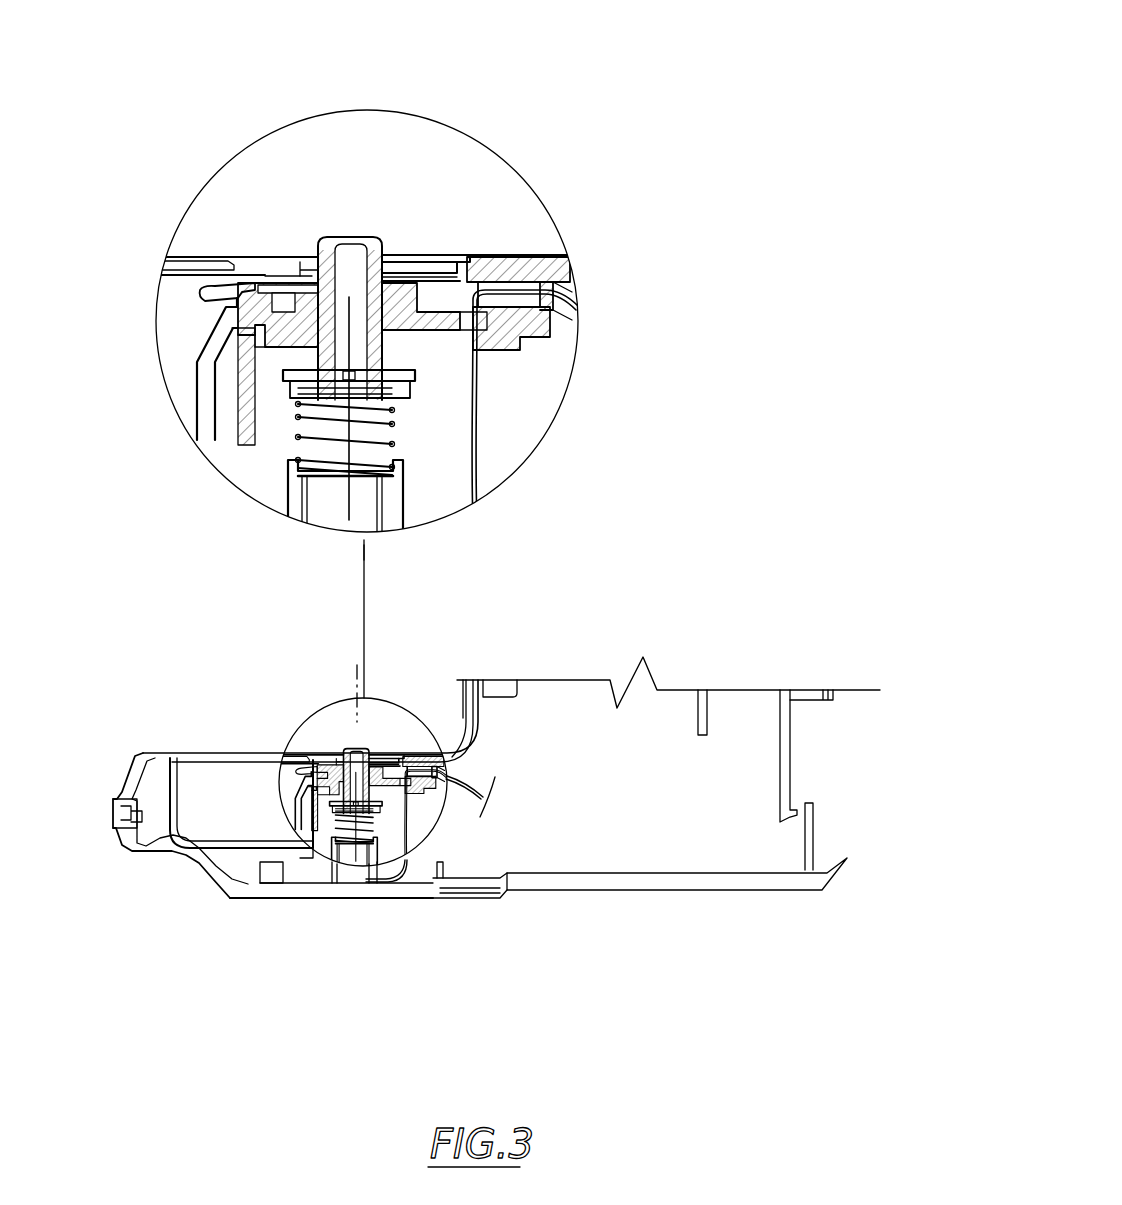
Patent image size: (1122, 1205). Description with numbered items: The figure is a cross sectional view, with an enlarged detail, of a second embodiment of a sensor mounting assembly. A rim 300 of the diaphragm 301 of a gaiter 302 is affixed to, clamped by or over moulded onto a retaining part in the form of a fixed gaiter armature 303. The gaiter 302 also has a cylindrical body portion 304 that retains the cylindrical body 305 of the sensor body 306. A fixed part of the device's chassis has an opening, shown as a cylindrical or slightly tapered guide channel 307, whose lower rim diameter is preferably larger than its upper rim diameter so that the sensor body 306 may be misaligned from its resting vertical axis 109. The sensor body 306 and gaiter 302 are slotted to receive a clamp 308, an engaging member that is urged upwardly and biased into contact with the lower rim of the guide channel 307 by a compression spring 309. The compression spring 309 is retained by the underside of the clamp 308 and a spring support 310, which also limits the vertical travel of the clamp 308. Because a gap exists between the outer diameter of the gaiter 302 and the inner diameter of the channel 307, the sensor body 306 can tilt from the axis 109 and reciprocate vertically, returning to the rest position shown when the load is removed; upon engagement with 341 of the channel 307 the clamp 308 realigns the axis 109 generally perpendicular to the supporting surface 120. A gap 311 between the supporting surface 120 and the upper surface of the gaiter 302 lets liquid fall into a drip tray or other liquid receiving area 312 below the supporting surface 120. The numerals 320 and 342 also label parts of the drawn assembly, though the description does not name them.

The resting vertical axis 109 is at (347, 543).
The supporting surface 120 is at (238, 252).
The rim 300 is at (448, 262).
The diaphragm 301 is at (425, 262).
The gaiter 302 is at (265, 262).
The fixed gaiter armature 303 is at (508, 262).
The cylindrical body portion 304 is at (387, 362).
The cylindrical body 305 is at (368, 248).
The sensor body 306 is at (345, 400).
The guide channel 307 is at (303, 330).
The clamp 308 is at (413, 380).
The compression spring 309 is at (397, 443).
The spring support 310 is at (303, 515).
The gap 311 is at (198, 295).
The liquid receiving area 312 is at (192, 342).
The housing 320 is at (247, 850).
The column 341 is at (338, 368).
The shoulder 342 is at (312, 262).